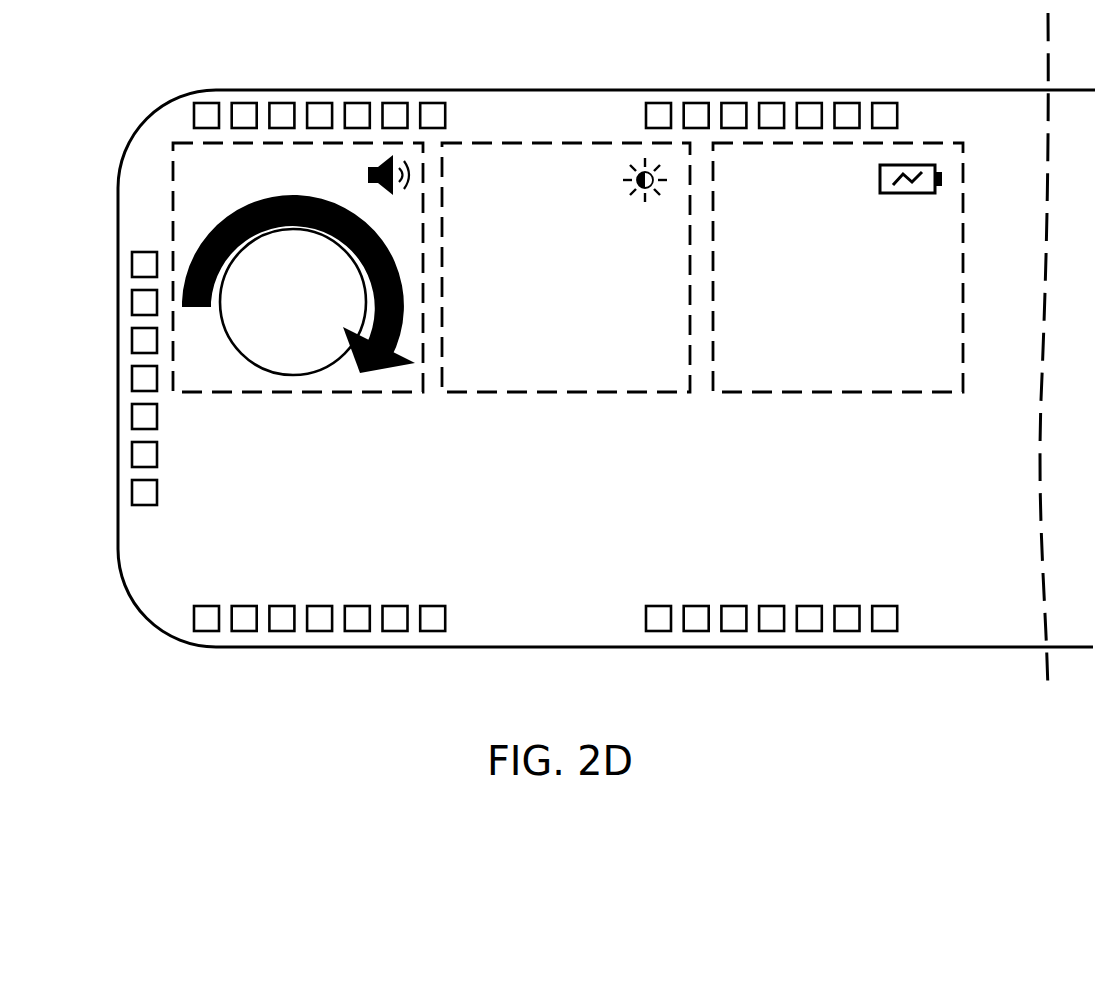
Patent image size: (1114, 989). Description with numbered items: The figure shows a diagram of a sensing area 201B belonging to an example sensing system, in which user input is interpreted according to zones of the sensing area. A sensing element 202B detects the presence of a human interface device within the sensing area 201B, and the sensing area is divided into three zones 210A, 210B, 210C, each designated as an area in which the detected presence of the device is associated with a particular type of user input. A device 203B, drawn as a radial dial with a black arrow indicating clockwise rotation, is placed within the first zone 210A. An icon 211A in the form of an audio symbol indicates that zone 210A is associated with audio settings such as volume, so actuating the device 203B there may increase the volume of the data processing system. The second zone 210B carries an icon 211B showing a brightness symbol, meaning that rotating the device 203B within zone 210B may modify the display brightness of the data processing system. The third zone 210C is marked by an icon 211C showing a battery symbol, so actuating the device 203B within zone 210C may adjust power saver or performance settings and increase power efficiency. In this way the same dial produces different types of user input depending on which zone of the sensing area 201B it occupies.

The sensing area 201B is at (152, 568).
The sensing element 202B is at (245, 117).
The device 203B is at (273, 353).
The zone 210A is at (298, 267).
The zone 210B is at (566, 267).
The zone 210C is at (838, 267).
The icon 211A is at (376, 152).
The icon 211B is at (646, 219).
The icon 211C is at (909, 152).